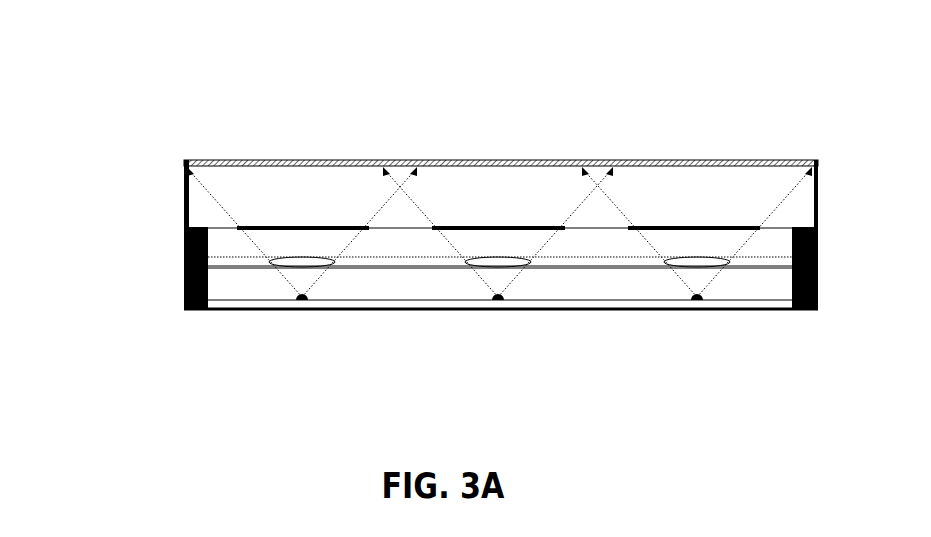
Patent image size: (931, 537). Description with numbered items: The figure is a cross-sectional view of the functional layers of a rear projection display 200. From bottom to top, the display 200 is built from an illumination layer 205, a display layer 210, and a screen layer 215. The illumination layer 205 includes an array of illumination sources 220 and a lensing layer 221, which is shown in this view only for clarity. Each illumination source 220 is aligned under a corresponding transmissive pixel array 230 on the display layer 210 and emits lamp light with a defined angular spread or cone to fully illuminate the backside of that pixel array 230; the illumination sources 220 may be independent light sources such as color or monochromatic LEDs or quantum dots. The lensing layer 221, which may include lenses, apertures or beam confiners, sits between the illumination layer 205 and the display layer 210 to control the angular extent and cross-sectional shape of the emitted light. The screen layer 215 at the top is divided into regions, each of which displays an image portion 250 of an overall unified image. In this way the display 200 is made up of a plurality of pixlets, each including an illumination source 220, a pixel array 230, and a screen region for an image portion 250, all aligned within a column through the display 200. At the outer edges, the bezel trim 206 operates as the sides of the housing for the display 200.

The rear projection display 200 is at (186, 76).
The illumination layer 205 is at (173, 237).
The bezel trim 206 is at (818, 310).
The display layer 210 is at (183, 228).
The screen layer 215 is at (173, 210).
The illumination source 220 is at (302, 301).
The lensing layer 221 is at (248, 268).
The transmissive pixel array 230 is at (308, 226).
The image portion 250 is at (817, 151).